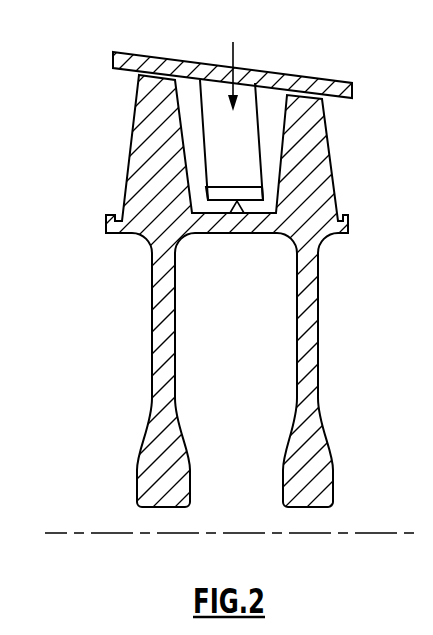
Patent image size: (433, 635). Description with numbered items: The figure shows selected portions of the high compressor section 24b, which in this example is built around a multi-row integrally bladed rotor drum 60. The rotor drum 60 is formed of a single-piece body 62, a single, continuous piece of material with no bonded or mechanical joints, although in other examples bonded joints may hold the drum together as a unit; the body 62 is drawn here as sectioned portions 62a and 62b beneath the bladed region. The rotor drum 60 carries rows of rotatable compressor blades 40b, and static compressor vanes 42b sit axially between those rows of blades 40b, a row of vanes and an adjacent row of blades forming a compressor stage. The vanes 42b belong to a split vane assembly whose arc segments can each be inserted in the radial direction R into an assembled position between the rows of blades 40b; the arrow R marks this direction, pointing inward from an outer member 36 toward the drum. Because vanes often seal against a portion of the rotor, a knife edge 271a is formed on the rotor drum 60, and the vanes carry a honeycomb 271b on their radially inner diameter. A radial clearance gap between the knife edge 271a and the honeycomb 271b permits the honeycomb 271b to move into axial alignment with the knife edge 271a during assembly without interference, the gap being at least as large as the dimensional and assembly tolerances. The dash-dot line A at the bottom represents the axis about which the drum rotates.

The high compressor section 24b is at (216, 317).
The outer platform / shroud plate 36 is at (156, 57).
The compressor blades 40b is at (130, 143).
The compressor vanes 42b is at (296, 124).
The knife edge 271a is at (241, 206).
The honeycomb 271b is at (267, 192).
The multi-row integrally bladed rotor drum 60 is at (181, 326).
The single-piece body 62 is at (216, 317).
The first leg 62a is at (151, 370).
The second leg 62b is at (319, 368).
The radial direction R is at (236, 53).
The axis A is at (77, 532).